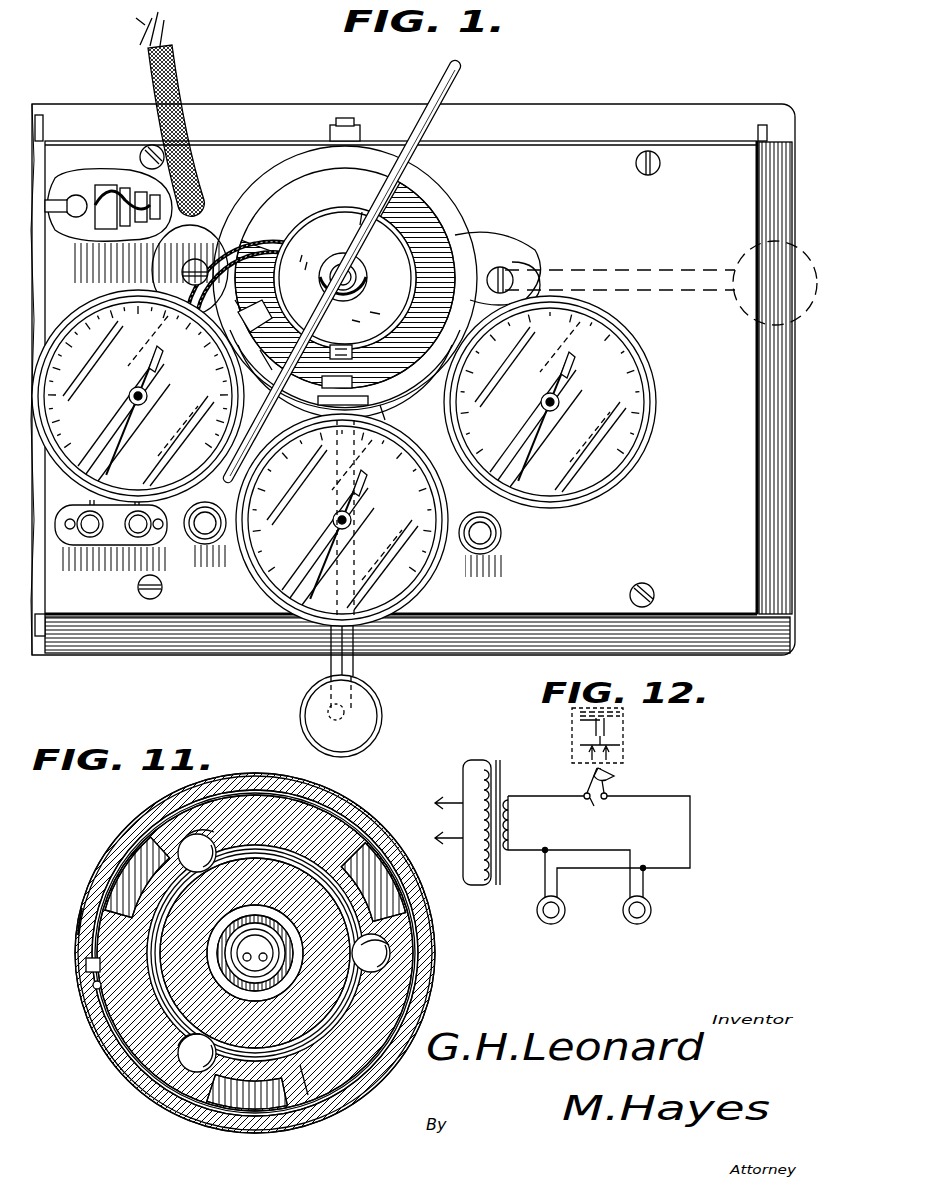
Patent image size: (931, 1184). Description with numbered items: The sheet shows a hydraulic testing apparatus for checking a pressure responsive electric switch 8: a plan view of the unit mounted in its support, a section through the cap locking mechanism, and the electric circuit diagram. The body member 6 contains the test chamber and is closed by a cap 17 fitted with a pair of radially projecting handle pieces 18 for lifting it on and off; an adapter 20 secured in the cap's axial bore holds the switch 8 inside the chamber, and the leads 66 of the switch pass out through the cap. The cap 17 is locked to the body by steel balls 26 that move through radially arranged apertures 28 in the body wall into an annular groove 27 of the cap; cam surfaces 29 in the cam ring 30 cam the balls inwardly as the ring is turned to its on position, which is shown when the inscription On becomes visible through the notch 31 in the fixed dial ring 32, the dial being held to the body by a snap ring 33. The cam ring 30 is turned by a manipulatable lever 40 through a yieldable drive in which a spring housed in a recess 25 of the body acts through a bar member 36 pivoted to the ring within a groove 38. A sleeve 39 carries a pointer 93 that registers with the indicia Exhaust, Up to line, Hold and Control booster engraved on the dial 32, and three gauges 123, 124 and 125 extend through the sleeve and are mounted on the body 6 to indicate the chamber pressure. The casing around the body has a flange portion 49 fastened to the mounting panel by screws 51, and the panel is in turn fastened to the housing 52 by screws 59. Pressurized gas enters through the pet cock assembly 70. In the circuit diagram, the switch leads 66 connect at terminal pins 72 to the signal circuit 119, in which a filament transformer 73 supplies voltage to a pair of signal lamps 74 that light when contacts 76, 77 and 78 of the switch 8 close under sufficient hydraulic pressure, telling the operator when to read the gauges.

In FIG. 11, the body member 6 is at (310, 1098).
In FIG. 1, the pressure responsive electric switch 8 is at (350, 300).
In FIG. 11, the pressure responsive electric switch 8 is at (272, 935).
In FIG. 12, the pressure responsive electric switch 8 is at (566, 734).
In FIG. 1, the cap 17 is at (325, 222).
In FIG. 11, the cap 17 is at (178, 978).
In FIG. 1, the handle pieces 18 is at (447, 92).
In FIG. 1, the adapter 20 is at (360, 272).
In FIG. 11, the adapter 20 is at (256, 925).
In FIG. 11, the recess 25 is at (80, 920).
In FIG. 11, the balls 26 is at (188, 840).
In FIG. 11, the annular groove 27 is at (282, 882).
In FIG. 11, the apertures 28 is at (214, 828).
In FIG. 11, the cam surfaces 29 is at (118, 858).
In FIG. 11, the cam ring 30 is at (252, 774).
In FIG. 1, the notch 31 is at (337, 346).
In FIG. 1, the dial ring 32 is at (437, 243).
In FIG. 1, the snap ring 33 is at (355, 208).
In FIG. 11, the bar member 36 is at (92, 985).
In FIG. 11, the groove 38 is at (88, 965).
In FIG. 11, the sleeve 39 is at (142, 812).
In FIG. 1, the lever 40 is at (658, 271).
In FIG. 1, the flange portion 49 is at (521, 285).
In FIG. 1, the screws 51 is at (196, 262).
In FIG. 1, the housing 52 is at (598, 112).
In FIG. 1, the screws 59 is at (150, 150).
In FIG. 1, the leads 66 is at (272, 255).
In FIG. 11, the leads 66 is at (255, 950).
In FIG. 12, the leads 66 is at (614, 776).
In FIG. 1, the pet cock assembly 70 is at (122, 178).
In FIG. 1, the terminal pins 72 is at (112, 540).
In FIG. 12, the terminal pins 72 is at (594, 798).
In FIG. 12, the filament transformer 73 is at (488, 749).
In FIG. 1, the signal lamps 74 is at (205, 545).
In FIG. 12, the signal lamps 74 is at (625, 920).
In FIG. 12, the contact 76 is at (586, 748).
In FIG. 12, the contact 77 is at (622, 730).
In FIG. 12, the contact 78 is at (610, 748).
In FIG. 1, the pointer 93 is at (250, 328).
In FIG. 12, the signal circuit 119 is at (699, 798).
In FIG. 1, the gauge 123 is at (80, 305).
In FIG. 1, the gauge 124 is at (618, 478).
In FIG. 1, the gauge 125 is at (262, 592).